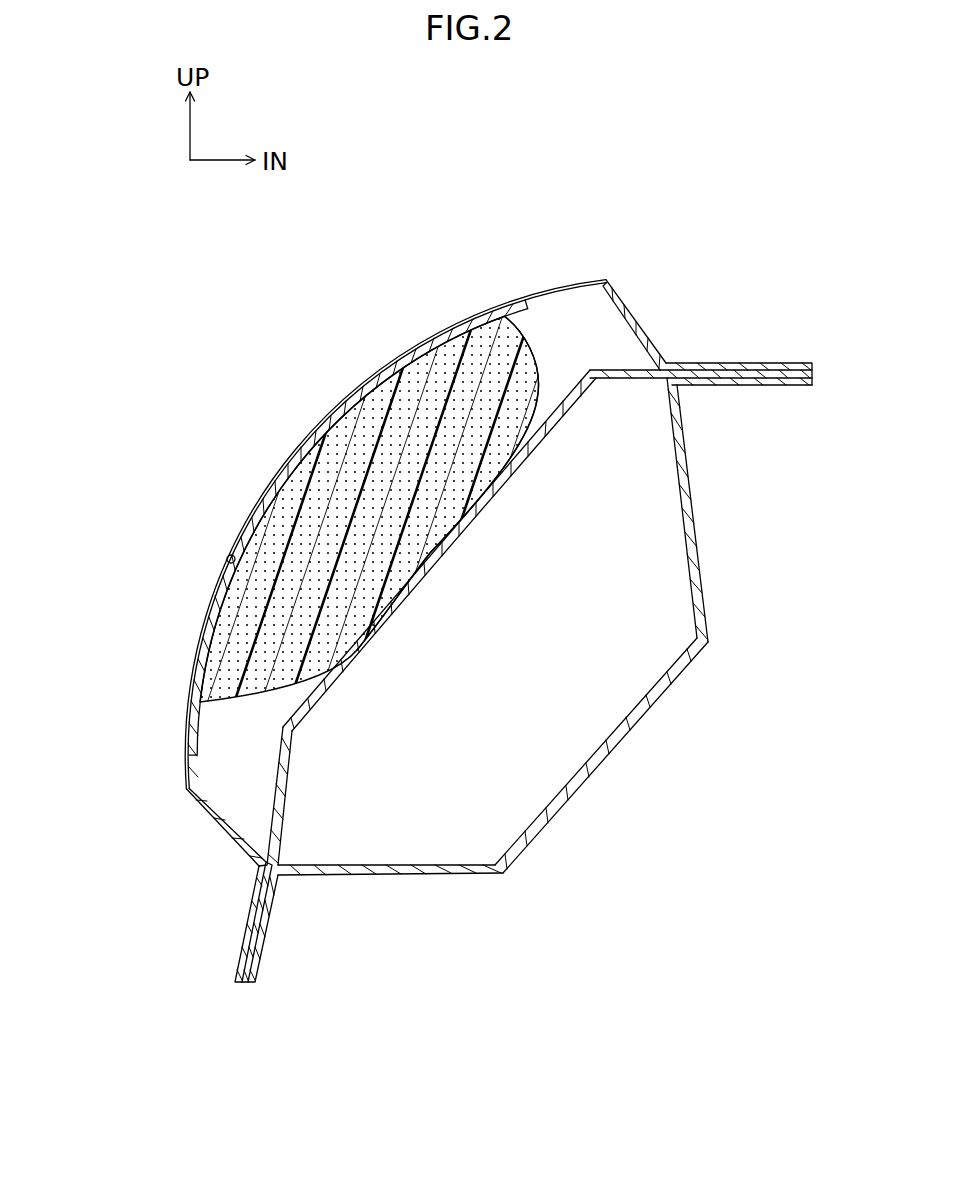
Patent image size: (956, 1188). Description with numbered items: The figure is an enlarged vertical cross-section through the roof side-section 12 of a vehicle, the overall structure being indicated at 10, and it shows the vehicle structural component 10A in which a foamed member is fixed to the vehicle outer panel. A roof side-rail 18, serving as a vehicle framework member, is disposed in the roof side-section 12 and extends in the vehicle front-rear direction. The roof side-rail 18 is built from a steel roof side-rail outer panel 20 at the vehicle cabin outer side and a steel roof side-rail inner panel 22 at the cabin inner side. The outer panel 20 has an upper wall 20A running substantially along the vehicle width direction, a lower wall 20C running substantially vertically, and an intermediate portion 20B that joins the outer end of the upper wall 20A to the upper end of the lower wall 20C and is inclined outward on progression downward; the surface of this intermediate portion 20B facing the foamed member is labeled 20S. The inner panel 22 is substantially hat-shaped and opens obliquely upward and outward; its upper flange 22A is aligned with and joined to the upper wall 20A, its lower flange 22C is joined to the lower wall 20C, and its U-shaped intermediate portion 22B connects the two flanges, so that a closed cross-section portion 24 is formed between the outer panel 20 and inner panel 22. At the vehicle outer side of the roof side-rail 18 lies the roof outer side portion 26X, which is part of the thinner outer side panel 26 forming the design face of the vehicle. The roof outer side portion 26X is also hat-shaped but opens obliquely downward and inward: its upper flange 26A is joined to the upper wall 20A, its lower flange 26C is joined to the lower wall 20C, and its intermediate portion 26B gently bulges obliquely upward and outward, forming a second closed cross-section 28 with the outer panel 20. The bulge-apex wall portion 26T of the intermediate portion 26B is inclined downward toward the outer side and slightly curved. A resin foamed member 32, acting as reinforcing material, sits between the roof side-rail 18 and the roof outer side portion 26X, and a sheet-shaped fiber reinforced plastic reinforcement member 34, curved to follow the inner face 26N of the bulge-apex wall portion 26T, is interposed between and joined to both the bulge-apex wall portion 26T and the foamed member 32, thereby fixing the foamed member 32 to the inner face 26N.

The vehicle pillar structure 10 is at (95, 958).
The vehicle structural component 10A is at (150, 763).
The roof side-section 12 is at (200, 353).
The roof side-rail 18 is at (762, 602).
The roof side-rail outer panel 20 is at (478, 637).
The upper wall 20A is at (736, 363).
The intermediate portion 20B is at (450, 542).
The lower wall 20C is at (243, 940).
The outer surface of inclined wall 20S is at (402, 577).
The roof side-rail inner panel 22 is at (530, 680).
The upper flange 22A is at (757, 386).
The intermediate portion 22B is at (585, 790).
The lower flange 22C is at (269, 935).
The closed cross-section portion 24 is at (516, 743).
The outer side panel 26 is at (468, 589).
The roof outer side portion 26X is at (557, 286).
The upper flange 26A is at (707, 363).
The intermediate portion 26B is at (276, 453).
The lower flange 26C is at (256, 890).
The inner face 26N is at (226, 559).
The bulge-apex wall portion 26T is at (268, 470).
The closed cross-section 28 is at (576, 353).
The foamed member 32 is at (540, 405).
The reinforcement member 34 is at (343, 405).